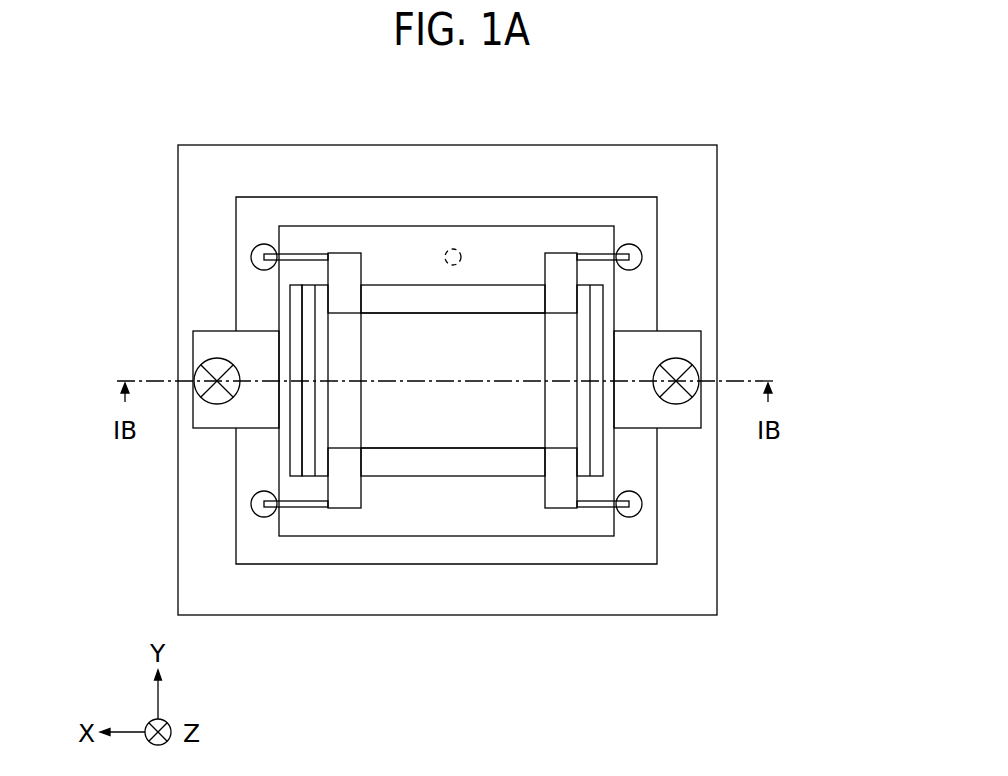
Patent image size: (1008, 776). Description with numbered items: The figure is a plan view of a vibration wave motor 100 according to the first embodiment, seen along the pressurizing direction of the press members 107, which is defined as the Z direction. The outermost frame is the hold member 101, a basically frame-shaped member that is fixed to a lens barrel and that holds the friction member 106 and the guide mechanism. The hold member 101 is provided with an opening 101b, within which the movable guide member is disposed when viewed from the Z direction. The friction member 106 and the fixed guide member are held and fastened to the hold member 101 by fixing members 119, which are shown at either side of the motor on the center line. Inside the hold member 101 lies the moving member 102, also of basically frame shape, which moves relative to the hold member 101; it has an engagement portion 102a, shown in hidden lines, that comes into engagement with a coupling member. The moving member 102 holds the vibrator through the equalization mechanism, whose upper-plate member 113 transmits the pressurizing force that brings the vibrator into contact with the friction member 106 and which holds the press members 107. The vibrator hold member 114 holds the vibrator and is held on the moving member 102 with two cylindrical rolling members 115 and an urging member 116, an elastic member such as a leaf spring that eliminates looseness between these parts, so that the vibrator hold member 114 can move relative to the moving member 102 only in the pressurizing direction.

The vibration wave motor 100 is at (184, 90).
The hold member 101 is at (703, 256).
The opening 101b is at (620, 565).
The moving member 102 is at (606, 452).
The engagement portion 102a is at (453, 249).
The friction member 106 is at (670, 342).
The press members 107 is at (252, 250).
The upper-plate member 113 is at (416, 337).
The vibrator hold member 114 is at (523, 300).
The rolling members 115 is at (313, 300).
The urging member 116 is at (296, 378).
The fixing members 119 is at (213, 364).